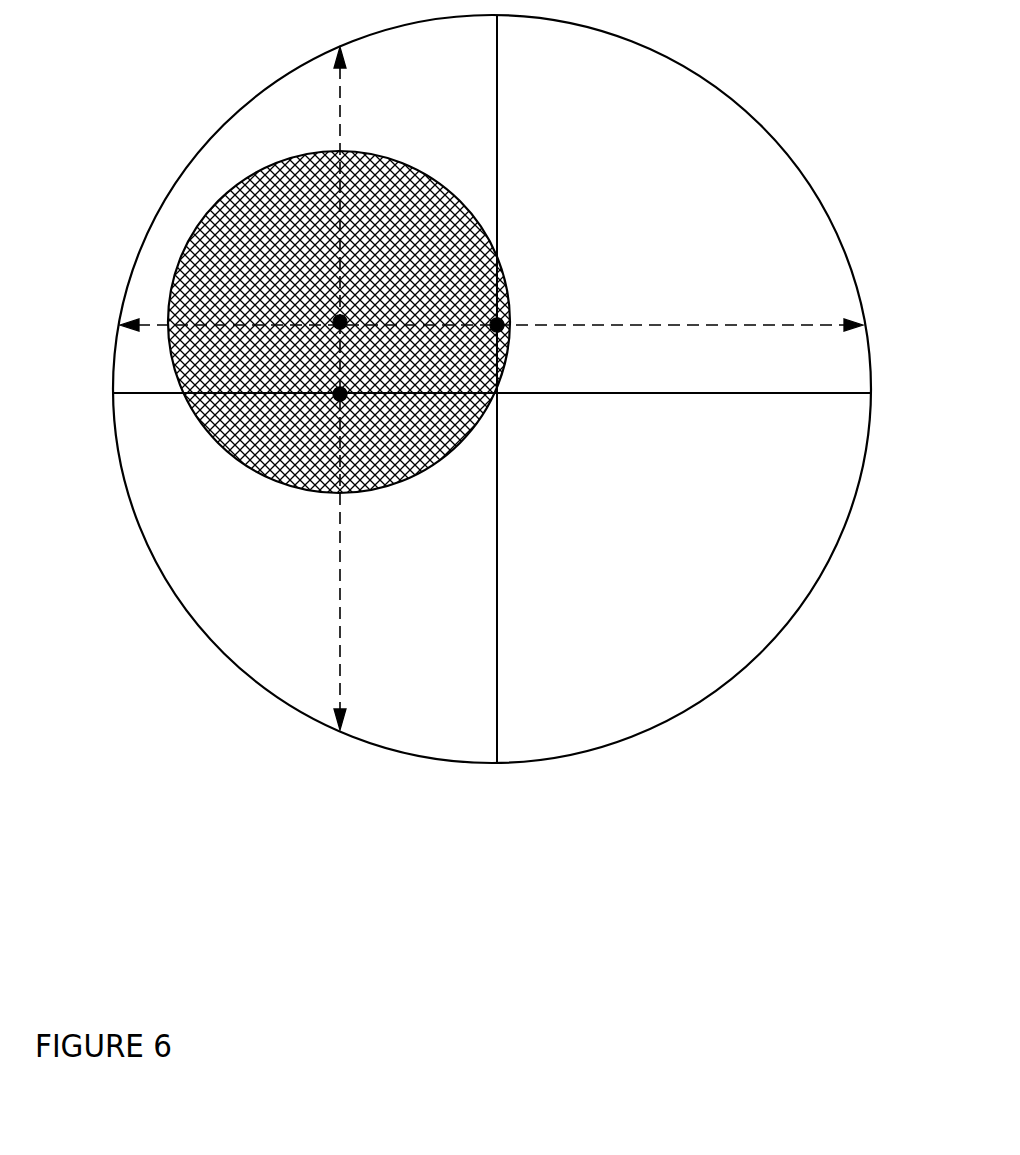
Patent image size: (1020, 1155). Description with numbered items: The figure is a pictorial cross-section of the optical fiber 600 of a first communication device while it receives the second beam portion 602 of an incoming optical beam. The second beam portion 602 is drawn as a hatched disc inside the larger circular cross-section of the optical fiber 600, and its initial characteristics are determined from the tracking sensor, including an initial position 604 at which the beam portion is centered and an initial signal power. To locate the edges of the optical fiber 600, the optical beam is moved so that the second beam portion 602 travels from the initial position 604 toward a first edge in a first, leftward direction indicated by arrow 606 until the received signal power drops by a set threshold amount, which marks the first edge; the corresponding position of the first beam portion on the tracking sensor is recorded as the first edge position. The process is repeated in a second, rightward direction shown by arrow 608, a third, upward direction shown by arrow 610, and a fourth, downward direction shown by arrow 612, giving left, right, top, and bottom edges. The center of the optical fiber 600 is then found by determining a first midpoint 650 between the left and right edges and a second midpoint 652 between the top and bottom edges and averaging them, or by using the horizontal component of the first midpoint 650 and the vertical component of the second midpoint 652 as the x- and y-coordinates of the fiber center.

The optical fiber 600 is at (122, 1018).
The second beam portion 602 is at (316, 287).
The initial position 604 is at (346, 320).
The arrow indicating first direction 606 is at (160, 326).
The arrow indicating second direction 608 is at (818, 326).
The arrow indicating third direction 610 is at (340, 111).
The arrow indicating fourth direction 612 is at (340, 675).
The first midpoint 650 is at (505, 322).
The second midpoint 652 is at (346, 400).